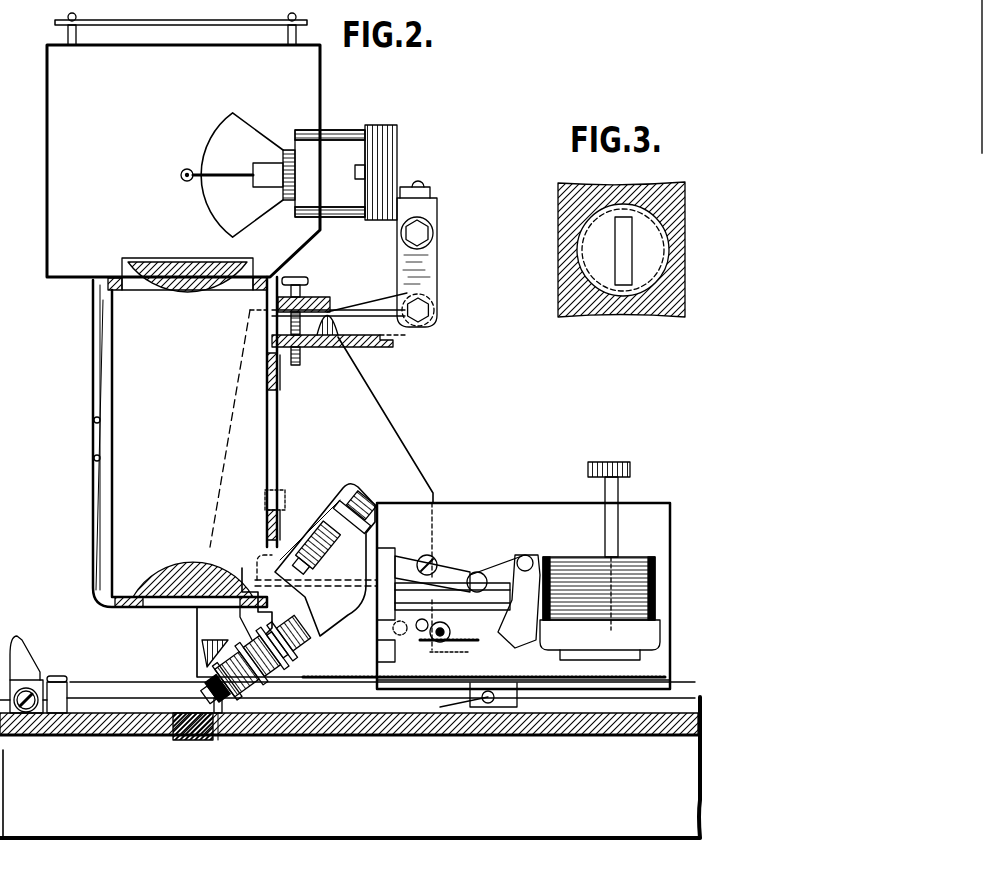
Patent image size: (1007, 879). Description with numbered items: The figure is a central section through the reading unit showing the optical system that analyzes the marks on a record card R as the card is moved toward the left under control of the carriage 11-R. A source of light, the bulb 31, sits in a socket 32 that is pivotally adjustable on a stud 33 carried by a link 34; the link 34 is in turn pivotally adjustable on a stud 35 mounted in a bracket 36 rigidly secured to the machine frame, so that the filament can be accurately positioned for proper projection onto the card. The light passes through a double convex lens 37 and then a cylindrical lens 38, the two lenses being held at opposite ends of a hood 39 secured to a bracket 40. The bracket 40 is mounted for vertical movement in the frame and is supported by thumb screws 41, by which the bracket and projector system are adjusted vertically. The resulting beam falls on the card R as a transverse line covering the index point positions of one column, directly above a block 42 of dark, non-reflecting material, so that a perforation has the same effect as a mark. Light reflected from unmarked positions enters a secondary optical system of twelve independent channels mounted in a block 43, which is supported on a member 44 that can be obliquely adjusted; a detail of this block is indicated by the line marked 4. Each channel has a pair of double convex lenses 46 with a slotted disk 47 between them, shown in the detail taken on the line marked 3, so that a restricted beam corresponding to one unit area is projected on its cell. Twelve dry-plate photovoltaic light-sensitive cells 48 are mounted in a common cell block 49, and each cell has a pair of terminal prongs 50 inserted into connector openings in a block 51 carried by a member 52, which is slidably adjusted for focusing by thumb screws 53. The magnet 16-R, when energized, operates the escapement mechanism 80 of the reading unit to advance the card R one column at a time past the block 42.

In FIG. 2, the bulb 31 is at (232, 114).
In FIG. 2, the socket 32 is at (340, 132).
In FIG. 2, the stud 33 is at (423, 232).
In FIG. 2, the link 34 is at (430, 267).
In FIG. 2, the stud 35 is at (422, 310).
In FIG. 2, the bracket 36 is at (352, 318).
In FIG. 2, the double convex lens 37 is at (187, 292).
In FIG. 2, the cylindrical lens 38 is at (184, 547).
In FIG. 2, the hood 39 is at (118, 483).
In FIG. 2, the bracket 40 is at (283, 397).
In FIG. 2, the thumb screws 41 is at (303, 318).
In FIG. 2, the block 42 is at (187, 743).
In FIG. 2, the block 43 is at (207, 687).
In FIG. 3, the block 43 is at (673, 208).
In FIG. 2, the member 44 is at (227, 640).
In FIG. 2, the double convex lenses 46 is at (200, 697).
In FIG. 2, the slotted disk 47 is at (218, 715).
In FIG. 3, the slotted disk 47 is at (643, 252).
In FIG. 2, the light-sensitive cells 48 is at (250, 590).
In FIG. 2, the cell block 49 is at (255, 637).
In FIG. 2, the terminal prongs 50 is at (300, 642).
In FIG. 2, the block 51 is at (308, 632).
In FIG. 2, the member 52 is at (296, 540).
In FIG. 2, the thumb screws 53 is at (313, 530).
In FIG. 2, the escapement mechanism 80 is at (428, 648).
In FIG. 2, the magnet 16-R is at (627, 560).
In FIG. 2, the carriage 11-R is at (88, 687).
In FIG. 2, the record card R is at (124, 710).
In FIG. 2, the section line 3- 3 is at (210, 633).
In FIG. 2, the section line 4- 4 is at (338, 423).